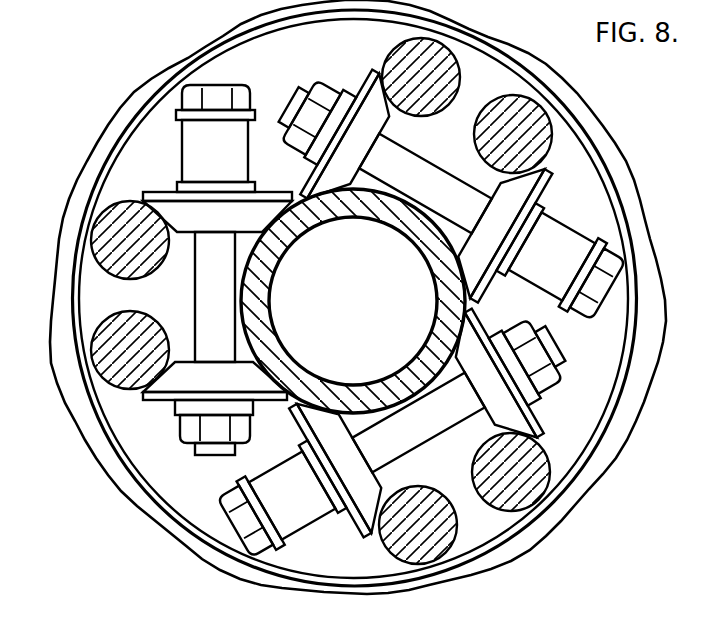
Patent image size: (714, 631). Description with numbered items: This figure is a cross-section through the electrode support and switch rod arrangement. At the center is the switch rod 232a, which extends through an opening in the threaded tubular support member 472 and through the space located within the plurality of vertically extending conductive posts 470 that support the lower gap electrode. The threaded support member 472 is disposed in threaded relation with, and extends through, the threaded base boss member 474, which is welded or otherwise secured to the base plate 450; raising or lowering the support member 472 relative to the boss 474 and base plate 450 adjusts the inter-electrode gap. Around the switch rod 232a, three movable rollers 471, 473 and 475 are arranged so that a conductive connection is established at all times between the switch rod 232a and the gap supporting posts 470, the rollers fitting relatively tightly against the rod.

The switch rod 232a is at (441, 307).
The base plate 450 is at (608, 480).
The conductive posts 470 is at (110, 232).
The movable roller 471 is at (168, 207).
The threaded tubular support member 472 is at (520, 517).
The movable roller 473 is at (369, 93).
The threaded base boss member 474 is at (503, 541).
The movable roller 475 is at (372, 505).